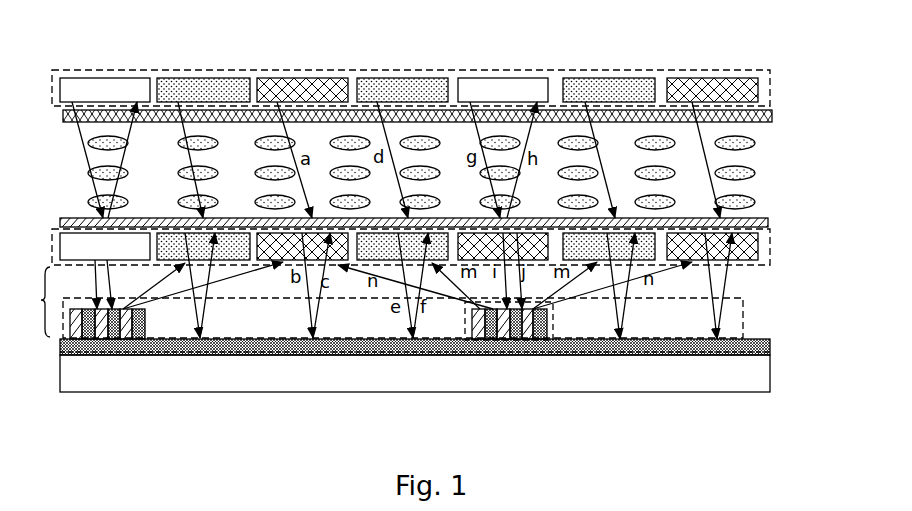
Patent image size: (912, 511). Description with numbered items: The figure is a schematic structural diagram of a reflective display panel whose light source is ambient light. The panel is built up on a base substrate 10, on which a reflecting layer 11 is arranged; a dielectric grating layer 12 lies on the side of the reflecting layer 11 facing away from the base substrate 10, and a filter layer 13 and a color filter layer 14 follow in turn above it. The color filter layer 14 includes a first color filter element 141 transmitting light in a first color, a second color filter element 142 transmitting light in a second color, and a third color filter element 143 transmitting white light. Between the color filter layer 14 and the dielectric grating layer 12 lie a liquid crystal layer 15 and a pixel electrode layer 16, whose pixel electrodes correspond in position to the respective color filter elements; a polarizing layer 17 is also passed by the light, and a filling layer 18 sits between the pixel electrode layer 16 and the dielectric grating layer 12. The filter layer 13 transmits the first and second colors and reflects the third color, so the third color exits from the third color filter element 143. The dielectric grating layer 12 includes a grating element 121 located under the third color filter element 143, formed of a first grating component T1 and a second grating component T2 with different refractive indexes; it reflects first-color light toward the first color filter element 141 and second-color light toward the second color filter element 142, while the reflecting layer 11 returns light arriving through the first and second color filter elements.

The base substrate 10 is at (740, 375).
The reflecting layer 11 is at (768, 348).
The dielectric grating layer 12 is at (468, 363).
The grating element 121 is at (566, 366).
The filter layer 13 is at (770, 221).
The color filter layer 14 is at (461, 62).
The first color filter element 141 is at (303, 83).
The second color filter element 142 is at (400, 80).
The third color filter element 143 is at (510, 77).
The liquid crystal layer 15 is at (765, 163).
The pixel electrode layer 16 is at (770, 255).
The polarizing layer 17 is at (772, 113).
The filling layer 18 is at (31, 302).
The first grating component T1 is at (485, 332).
The second grating component T2 is at (498, 332).